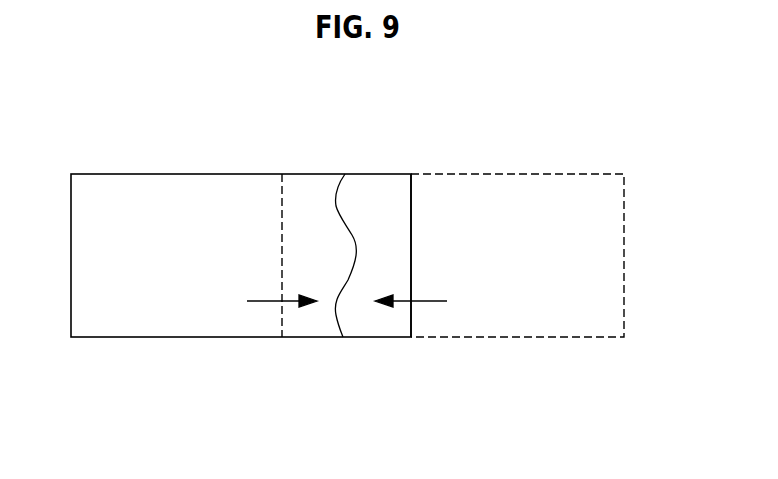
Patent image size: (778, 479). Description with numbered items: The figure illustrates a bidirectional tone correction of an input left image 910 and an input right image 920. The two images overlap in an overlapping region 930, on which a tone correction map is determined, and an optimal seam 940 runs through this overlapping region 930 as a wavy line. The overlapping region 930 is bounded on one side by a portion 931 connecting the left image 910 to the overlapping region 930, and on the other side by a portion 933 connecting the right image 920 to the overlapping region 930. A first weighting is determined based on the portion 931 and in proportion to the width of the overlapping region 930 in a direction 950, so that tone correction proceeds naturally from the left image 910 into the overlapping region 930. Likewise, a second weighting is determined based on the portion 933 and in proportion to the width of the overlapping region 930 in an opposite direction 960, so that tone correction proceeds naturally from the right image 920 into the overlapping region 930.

The left image 910 is at (107, 337).
The right image 920 is at (587, 337).
The overlapping region 930 is at (319, 323).
The portion connecting the left image and the overlapping region 931 is at (282, 174).
The portion connecting the right image and the overlapping region 933 is at (411, 217).
The optimal seam 940 is at (342, 218).
The direction 950 is at (265, 301).
The direction 960 is at (432, 301).